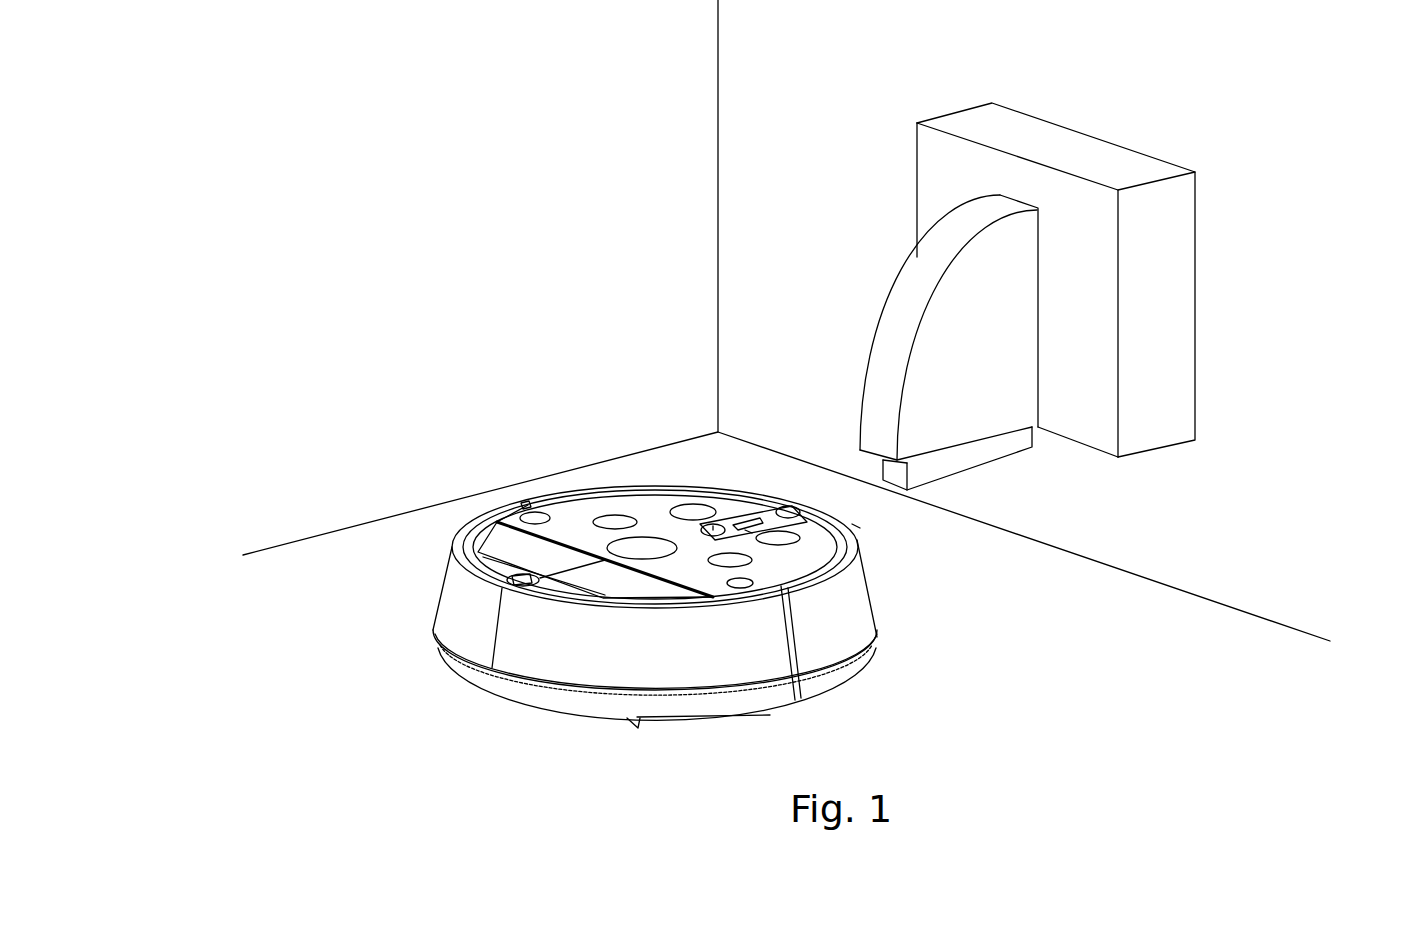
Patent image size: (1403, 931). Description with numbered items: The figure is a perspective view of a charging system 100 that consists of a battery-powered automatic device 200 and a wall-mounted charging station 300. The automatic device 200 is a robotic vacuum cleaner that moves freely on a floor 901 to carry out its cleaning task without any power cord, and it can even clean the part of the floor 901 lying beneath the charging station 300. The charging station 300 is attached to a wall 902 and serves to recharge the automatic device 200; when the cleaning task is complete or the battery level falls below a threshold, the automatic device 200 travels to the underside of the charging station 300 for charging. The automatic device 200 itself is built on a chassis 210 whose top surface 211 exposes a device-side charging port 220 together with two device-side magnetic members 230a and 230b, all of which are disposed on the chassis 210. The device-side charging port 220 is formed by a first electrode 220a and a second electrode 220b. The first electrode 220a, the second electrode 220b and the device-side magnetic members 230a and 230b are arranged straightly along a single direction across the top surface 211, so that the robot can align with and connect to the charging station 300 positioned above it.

The charging system 100 is at (303, 190).
The automatic device 200 is at (729, 540).
The charging station 300 is at (1156, 124).
The chassis 210 is at (552, 672).
The top surface 211 is at (568, 523).
The device-side charging port 220 is at (671, 415).
The first electrode 220a is at (737, 527).
The second electrode 220b is at (763, 512).
The device-side magnetic member 230a is at (753, 533).
The device-side magnetic member 230b is at (857, 525).
The floor 901 is at (373, 537).
The wall 902 is at (740, 262).